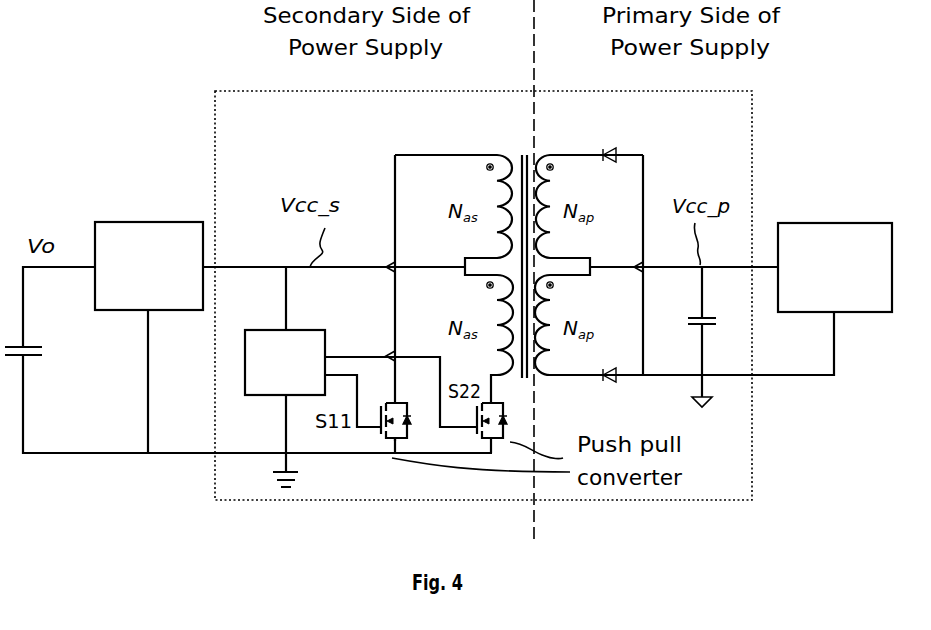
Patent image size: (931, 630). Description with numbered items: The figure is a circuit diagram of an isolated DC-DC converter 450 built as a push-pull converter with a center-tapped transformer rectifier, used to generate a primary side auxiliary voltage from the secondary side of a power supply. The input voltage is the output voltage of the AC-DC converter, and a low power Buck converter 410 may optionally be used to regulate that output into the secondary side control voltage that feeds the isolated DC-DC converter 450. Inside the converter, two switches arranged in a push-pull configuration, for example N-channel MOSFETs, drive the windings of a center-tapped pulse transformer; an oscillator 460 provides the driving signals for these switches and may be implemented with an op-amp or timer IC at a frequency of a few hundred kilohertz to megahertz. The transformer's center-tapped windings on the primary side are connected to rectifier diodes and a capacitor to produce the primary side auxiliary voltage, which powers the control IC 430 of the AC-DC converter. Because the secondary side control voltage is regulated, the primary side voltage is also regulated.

The Buck converter 410 is at (115, 220).
The control IC 430 is at (795, 220).
The isolated DC-DC converter 450 is at (213, 107).
The oscillator 460 is at (275, 328).